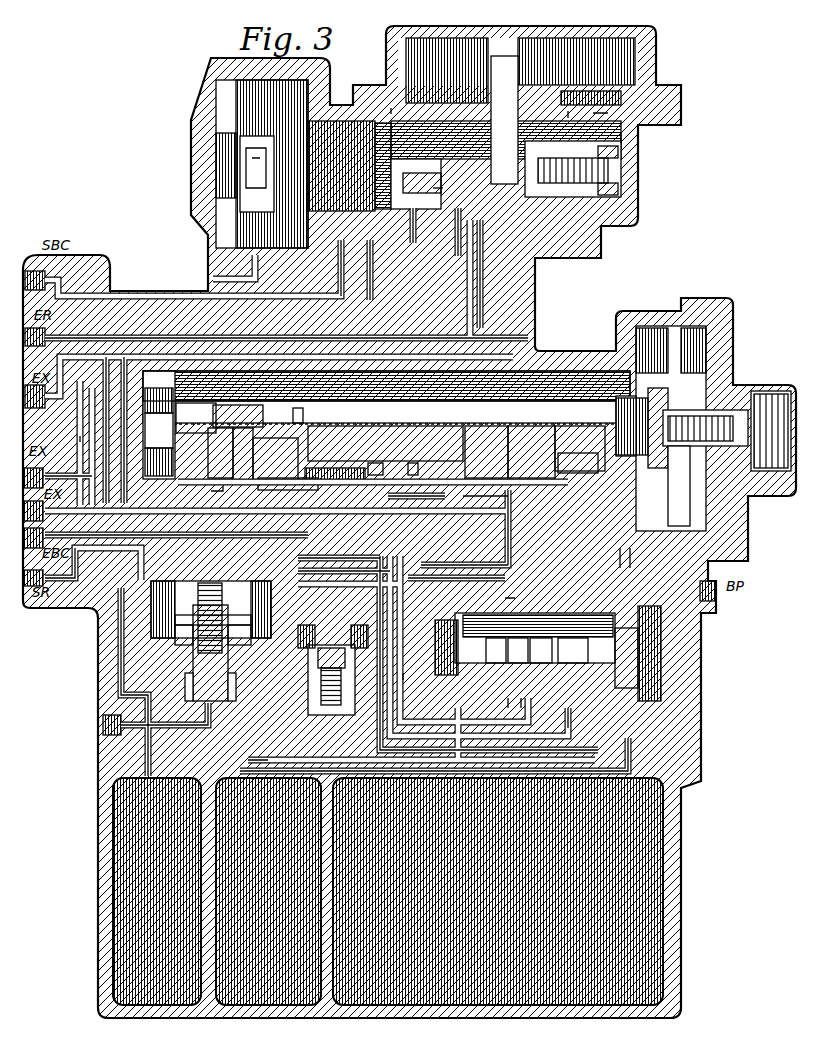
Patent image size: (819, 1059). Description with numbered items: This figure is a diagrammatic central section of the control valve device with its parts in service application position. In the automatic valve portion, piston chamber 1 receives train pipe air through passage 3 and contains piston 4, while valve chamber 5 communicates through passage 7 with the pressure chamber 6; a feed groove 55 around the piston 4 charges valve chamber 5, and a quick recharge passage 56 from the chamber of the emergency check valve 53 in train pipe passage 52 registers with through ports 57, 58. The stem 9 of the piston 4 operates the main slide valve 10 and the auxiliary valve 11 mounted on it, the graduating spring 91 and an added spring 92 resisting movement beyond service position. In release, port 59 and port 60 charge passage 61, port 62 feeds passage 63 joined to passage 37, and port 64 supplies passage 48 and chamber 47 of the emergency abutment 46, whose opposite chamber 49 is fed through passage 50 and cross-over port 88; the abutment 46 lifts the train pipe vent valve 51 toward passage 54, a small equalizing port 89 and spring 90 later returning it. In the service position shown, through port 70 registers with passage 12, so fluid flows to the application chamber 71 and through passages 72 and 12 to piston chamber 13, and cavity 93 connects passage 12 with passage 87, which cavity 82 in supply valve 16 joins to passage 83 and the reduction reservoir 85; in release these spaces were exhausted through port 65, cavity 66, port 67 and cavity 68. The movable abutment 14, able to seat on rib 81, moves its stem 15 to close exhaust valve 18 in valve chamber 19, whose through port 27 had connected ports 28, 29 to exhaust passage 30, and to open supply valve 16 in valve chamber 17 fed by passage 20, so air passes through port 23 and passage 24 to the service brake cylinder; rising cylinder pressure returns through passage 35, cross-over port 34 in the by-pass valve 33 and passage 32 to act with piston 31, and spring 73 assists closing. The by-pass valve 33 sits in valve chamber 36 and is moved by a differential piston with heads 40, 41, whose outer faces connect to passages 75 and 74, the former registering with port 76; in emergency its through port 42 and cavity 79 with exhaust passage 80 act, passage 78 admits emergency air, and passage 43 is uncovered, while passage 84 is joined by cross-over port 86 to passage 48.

The piston chamber 1 is at (703, 493).
The passage 3 is at (717, 533).
The piston 4 is at (697, 343).
The valve chamber 5 is at (147, 420).
The pressure chamber 6 is at (643, 818).
The passage 7 is at (622, 558).
The stem 9 is at (593, 405).
The main slide valve 10 is at (518, 427).
The auxiliary valve 11 is at (386, 396).
The passage 12 is at (262, 272).
The piston chamber 13 is at (247, 213).
The movable abutment 14 is at (278, 117).
The stem 15 is at (400, 147).
The supply valve 16 is at (523, 83).
The valve chamber 17 is at (623, 57).
The exhaust valve 18 is at (400, 187).
The valve chamber 19 is at (627, 130).
The passage 20 is at (72, 428).
The through port 23 is at (453, 82).
The passage 24 is at (547, 240).
The through port 27 is at (430, 187).
The port 28 is at (405, 208).
The port 29 is at (445, 208).
The exhaust passage 30 is at (123, 363).
The piston 31 is at (356, 182).
The passage 32 is at (513, 690).
The by-pass valve 33 is at (482, 667).
The cross-over port 34 is at (557, 670).
The passage 35 is at (560, 700).
The valve chamber 36 is at (563, 620).
The passage 37 is at (500, 590).
The piston head 40 is at (453, 647).
The piston head 41 is at (623, 675).
The through port 42 is at (525, 667).
The passage 43 is at (395, 668).
The movable abutment 46 is at (247, 617).
The chamber 47 is at (233, 583).
The passage 48 is at (427, 557).
The chamber 49 is at (233, 633).
The passage 50 is at (412, 596).
The train pipe vent valve 51 is at (187, 657).
The train pipe passage 52 is at (240, 675).
The emergency check valve 53 is at (340, 628).
The passage 54 is at (170, 720).
The feed groove 55 is at (637, 317).
The quick recharge passage 56 is at (323, 595).
The through port 57 is at (333, 504).
The through port 58 is at (247, 407).
The port 59 is at (462, 441).
The port 60 is at (287, 408).
The passage 61 is at (388, 492).
The port 62 is at (512, 444).
The passage 63 is at (462, 493).
The port 64 is at (558, 433).
The port 65 is at (220, 433).
The cavity 66 is at (200, 410).
The port 67 is at (240, 437).
The cavity 68 is at (373, 460).
The through port 70 is at (200, 425).
The application chamber 71 is at (110, 868).
The passage 72 is at (110, 667).
The spring 73 is at (587, 152).
The passage 74 is at (612, 550).
The passage 75 is at (313, 595).
The port 76 is at (240, 450).
The passage 78 is at (540, 763).
The cavity 79 is at (517, 650).
The exhaust passage 80 is at (500, 700).
The rib 81 is at (310, 110).
The cavity 82 is at (563, 85).
The passage 83 is at (253, 750).
The passage 84 is at (592, 105).
The reduction reservoir 85 is at (460, 302).
The cross-over port 86 is at (380, 443).
The passage 87 is at (475, 300).
The cross-over port 88 is at (578, 463).
The equalizing port 89 is at (167, 628).
The spring 90 is at (200, 575).
The graduating spring 91 is at (690, 438).
The spring 92 is at (750, 387).
The cavity 93 is at (288, 488).